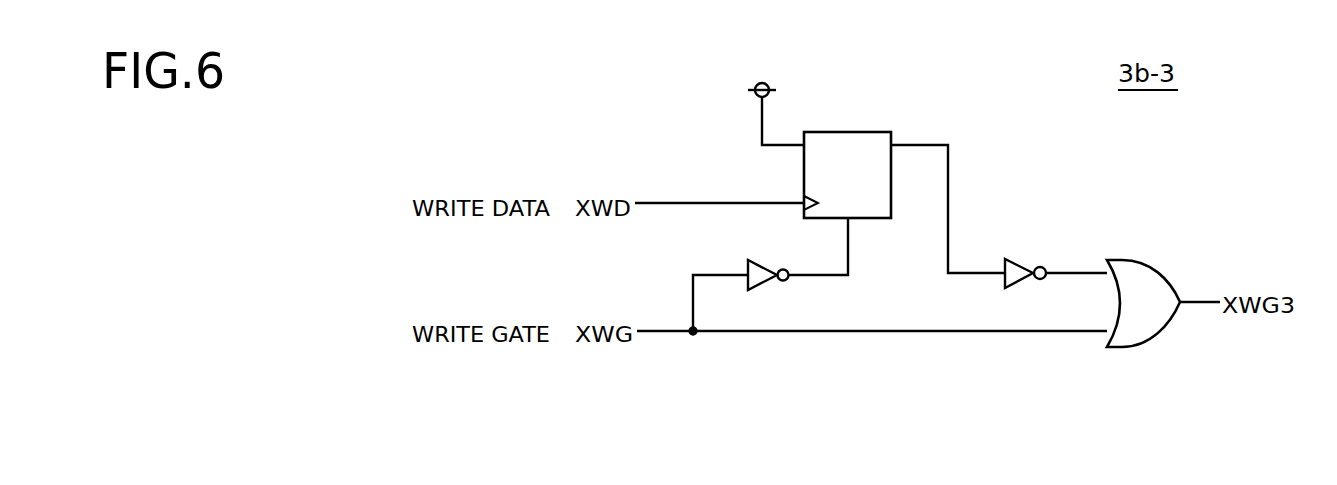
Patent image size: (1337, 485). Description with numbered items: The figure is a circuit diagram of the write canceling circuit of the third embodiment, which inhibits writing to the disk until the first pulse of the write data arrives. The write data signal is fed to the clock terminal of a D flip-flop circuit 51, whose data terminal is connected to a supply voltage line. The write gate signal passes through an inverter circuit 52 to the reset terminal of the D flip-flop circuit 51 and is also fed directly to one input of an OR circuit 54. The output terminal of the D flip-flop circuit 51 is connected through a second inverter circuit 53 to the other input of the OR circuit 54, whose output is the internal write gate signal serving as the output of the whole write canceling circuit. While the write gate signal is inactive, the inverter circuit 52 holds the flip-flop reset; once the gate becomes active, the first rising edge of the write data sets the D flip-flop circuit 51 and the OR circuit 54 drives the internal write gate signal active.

The D flip-flop circuit 51 is at (848, 132).
The inverter circuit 52 is at (766, 258).
The inverter circuit 53 is at (1022, 258).
The OR circuit 54 is at (1122, 259).